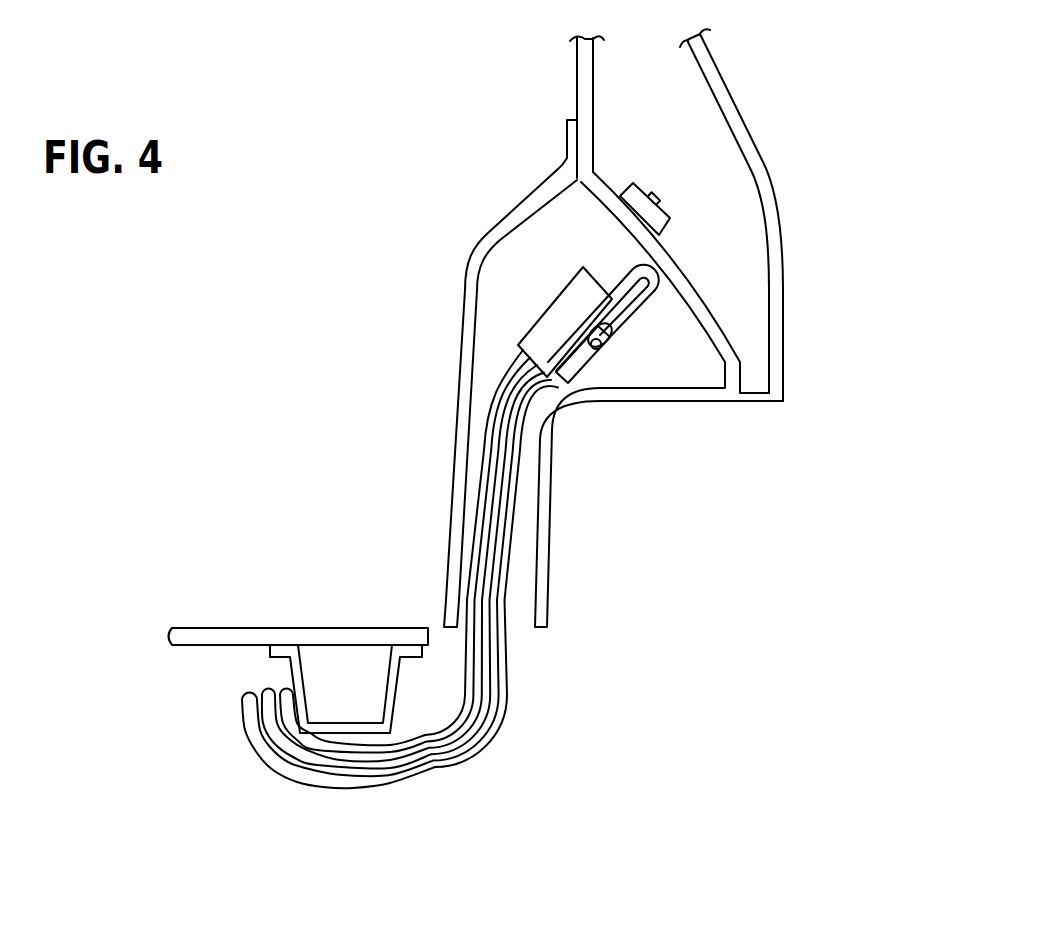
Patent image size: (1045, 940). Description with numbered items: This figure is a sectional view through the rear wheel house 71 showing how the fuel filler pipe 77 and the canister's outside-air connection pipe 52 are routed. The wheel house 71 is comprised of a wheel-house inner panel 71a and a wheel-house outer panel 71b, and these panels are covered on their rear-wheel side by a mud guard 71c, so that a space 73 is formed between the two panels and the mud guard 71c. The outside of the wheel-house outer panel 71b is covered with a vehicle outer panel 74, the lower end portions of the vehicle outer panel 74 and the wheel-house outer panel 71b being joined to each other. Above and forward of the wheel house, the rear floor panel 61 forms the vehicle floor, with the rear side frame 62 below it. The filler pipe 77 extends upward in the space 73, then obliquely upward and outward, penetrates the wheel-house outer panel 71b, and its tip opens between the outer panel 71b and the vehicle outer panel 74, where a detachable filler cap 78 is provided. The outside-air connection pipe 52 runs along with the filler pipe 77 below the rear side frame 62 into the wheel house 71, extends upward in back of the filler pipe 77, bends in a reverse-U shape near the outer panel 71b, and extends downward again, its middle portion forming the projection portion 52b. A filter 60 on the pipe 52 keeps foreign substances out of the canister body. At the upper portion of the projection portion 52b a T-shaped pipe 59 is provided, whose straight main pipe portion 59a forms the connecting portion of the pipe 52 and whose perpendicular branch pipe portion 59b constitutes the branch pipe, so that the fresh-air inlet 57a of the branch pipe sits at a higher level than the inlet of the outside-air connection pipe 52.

The wheel house 71 is at (609, 331).
The wheel-house inner panel 71a is at (506, 216).
The wheel-house outer panel 71b is at (577, 78).
The mud guard 71c is at (552, 583).
The vehicle outer panel 74 is at (745, 106).
The filler cap 78 is at (648, 182).
The projection portion 52b is at (669, 277).
The space 73 is at (657, 316).
The T-shaped pipe 59 is at (720, 381).
The main pipe portion 59a is at (629, 300).
The branch pipe portion 59b is at (612, 326).
The fresh-air inlet 57a is at (592, 386).
The filter 60 is at (627, 320).
The filler pipe 77 is at (503, 365).
The outside-air connection pipe 52 is at (507, 668).
The rear side frame 62 is at (397, 692).
The rear floor panel 61 is at (216, 627).